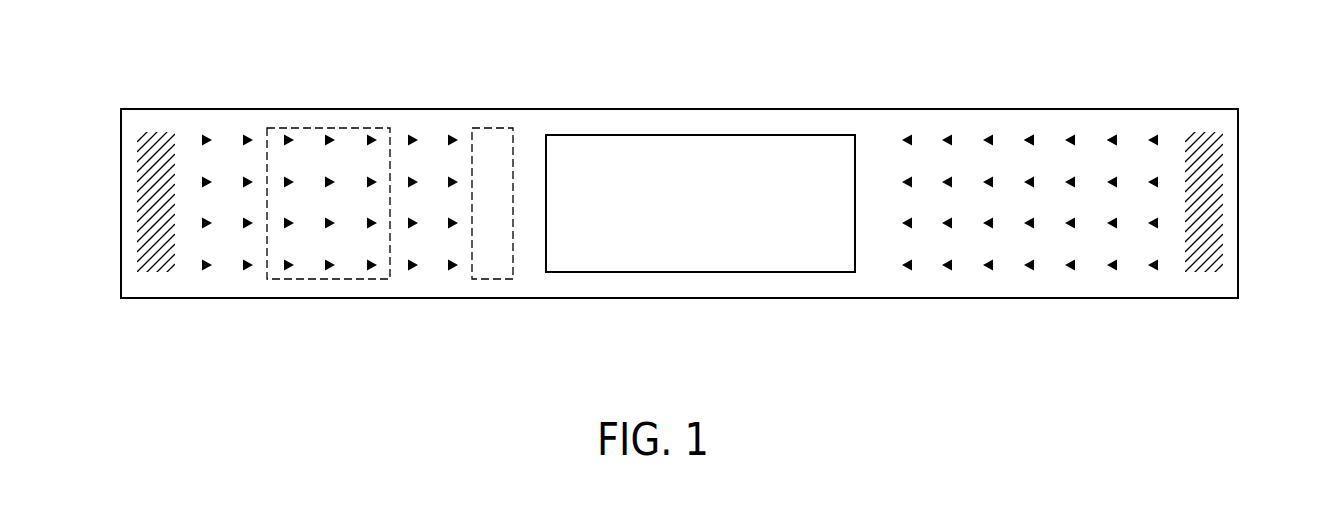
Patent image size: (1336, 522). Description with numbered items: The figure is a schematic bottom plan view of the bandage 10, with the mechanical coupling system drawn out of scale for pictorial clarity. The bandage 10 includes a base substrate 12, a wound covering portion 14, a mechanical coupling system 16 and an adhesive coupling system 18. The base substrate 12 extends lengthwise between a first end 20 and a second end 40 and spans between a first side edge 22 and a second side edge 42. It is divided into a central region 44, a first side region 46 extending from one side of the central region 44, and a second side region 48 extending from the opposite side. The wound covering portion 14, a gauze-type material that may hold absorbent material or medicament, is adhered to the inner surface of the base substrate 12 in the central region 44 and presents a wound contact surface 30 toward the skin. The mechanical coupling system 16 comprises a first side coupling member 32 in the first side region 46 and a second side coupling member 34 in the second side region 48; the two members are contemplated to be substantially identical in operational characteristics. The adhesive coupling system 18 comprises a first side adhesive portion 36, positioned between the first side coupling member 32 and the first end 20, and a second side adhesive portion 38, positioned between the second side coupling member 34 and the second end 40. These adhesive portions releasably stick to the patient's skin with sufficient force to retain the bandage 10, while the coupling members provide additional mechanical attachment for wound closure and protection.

The bandage 10 is at (1268, 105).
The base substrate 12 is at (598, 109).
The wound covering portion 14 is at (722, 245).
The mechanical coupling system 16 is at (1030, 139).
The adhesive coupling system 18 is at (1201, 118).
The first end 20 is at (112, 168).
The first side edge 22 is at (757, 109).
The wound contact surface 30 is at (686, 216).
The first side coupling member 32 is at (330, 137).
The second side coupling member 34 is at (1112, 139).
The first side adhesive portion 36 is at (155, 274).
The second side adhesive portion 38 is at (1202, 274).
The second end 40 is at (1248, 208).
The second side edge 42 is at (600, 298).
The central region 44 is at (795, 314).
The first side region 46 is at (305, 314).
The second side region 48 is at (1040, 314).